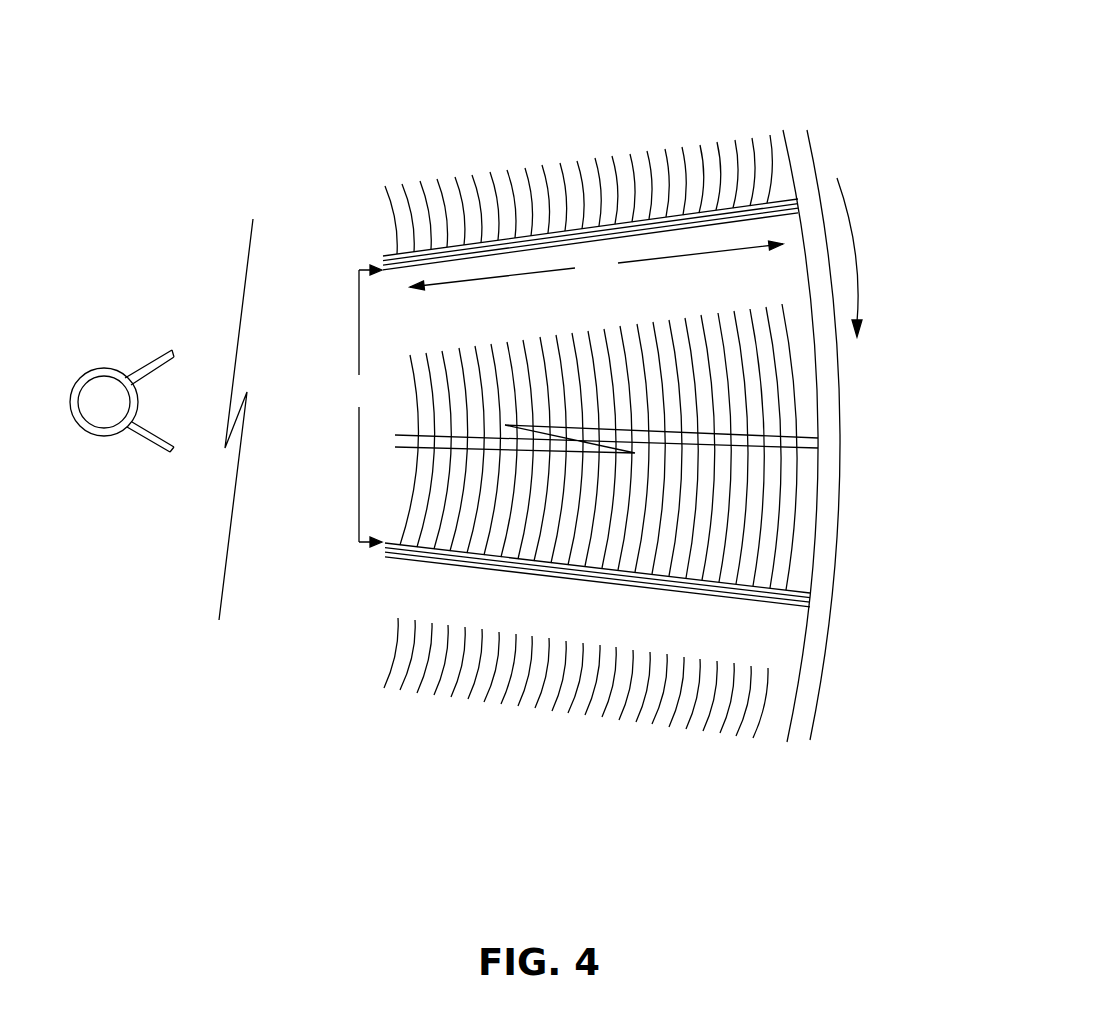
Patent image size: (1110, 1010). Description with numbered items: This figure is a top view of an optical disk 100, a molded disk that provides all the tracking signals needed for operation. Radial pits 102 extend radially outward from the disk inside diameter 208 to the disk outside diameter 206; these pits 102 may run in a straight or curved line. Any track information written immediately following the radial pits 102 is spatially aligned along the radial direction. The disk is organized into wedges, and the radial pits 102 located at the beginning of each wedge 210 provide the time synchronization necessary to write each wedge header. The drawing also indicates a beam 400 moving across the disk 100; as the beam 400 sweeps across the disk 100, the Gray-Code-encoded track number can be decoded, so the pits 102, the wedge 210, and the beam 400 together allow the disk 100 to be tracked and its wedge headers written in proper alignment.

The optical disk 100 is at (672, 70).
The radial pits 102 is at (380, 264).
The disk outside diameter 206 is at (820, 427).
The disk inside diameter 208 is at (122, 368).
The wedge 210 is at (358, 406).
The beam 400 is at (596, 265).